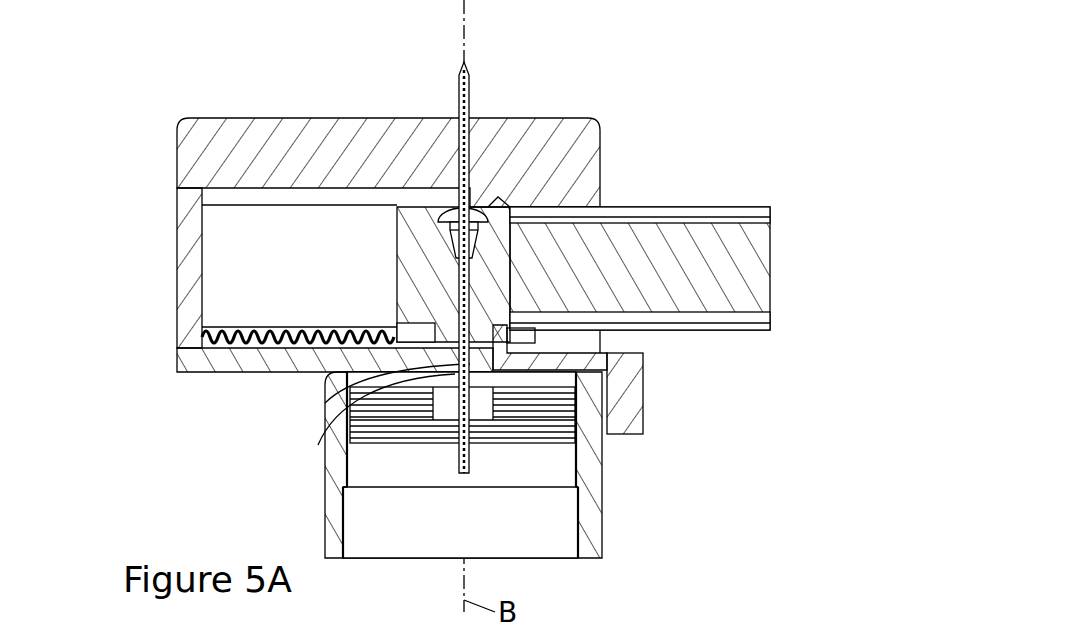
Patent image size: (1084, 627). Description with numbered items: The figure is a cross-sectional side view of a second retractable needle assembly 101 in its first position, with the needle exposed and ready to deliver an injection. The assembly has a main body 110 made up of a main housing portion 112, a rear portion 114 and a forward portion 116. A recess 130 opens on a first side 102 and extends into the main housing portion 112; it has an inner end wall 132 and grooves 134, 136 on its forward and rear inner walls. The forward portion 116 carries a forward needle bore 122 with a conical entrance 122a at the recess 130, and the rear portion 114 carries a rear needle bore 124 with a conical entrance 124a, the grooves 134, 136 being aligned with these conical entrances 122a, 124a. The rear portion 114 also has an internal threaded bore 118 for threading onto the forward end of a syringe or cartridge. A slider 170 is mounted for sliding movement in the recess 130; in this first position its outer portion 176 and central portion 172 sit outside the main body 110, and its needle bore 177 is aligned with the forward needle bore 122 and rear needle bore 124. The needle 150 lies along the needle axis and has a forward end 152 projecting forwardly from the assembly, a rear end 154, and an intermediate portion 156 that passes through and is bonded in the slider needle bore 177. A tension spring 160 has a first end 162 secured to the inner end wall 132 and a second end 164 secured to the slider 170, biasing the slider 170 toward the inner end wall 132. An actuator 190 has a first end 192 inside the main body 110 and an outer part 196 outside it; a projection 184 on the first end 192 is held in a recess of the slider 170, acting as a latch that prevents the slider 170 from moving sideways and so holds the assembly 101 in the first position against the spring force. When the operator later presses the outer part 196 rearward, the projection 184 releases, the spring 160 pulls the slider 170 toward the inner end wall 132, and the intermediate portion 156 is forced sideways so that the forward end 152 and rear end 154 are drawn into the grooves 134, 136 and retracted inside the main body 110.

The retractable needle assembly 101 is at (713, 92).
The first side 102 is at (763, 176).
The main body 110 is at (244, 378).
The main housing portion 112 is at (175, 365).
The rear portion 114 is at (327, 482).
The forward portion 116 is at (345, 150).
The internal threaded bore 118 is at (528, 450).
The forward needle bore 122 is at (505, 137).
The conical entrance 122a is at (490, 186).
The rear needle bore 124 is at (327, 387).
The conical entrance 124a is at (318, 398).
The recess 130 is at (237, 270).
The inner end wall 132 is at (200, 234).
The groove 134 is at (205, 190).
The groove 136 is at (180, 346).
The needle 150 is at (472, 102).
The forward end 152 is at (459, 88).
The rear end 154 is at (462, 458).
The intermediate portion 156 is at (446, 300).
The tension spring 160 is at (215, 372).
The first end 162 is at (204, 333).
The second end 164 is at (405, 325).
The slider 170 is at (713, 295).
The central portion 172 is at (620, 265).
The outer portion 176 is at (745, 260).
The needle bore 177 is at (440, 244).
The projection 184 is at (610, 362).
The actuator 190 is at (630, 407).
The first end 192 is at (565, 425).
The outer part 196 is at (633, 426).